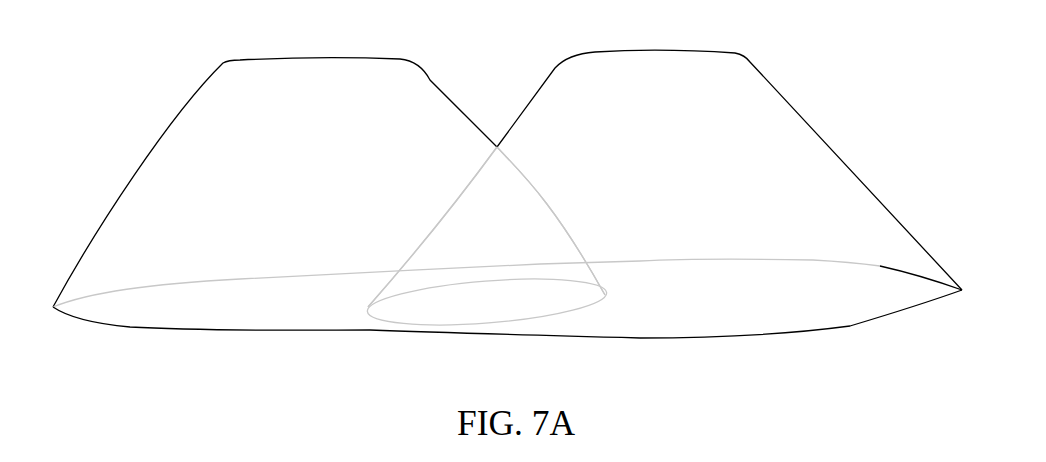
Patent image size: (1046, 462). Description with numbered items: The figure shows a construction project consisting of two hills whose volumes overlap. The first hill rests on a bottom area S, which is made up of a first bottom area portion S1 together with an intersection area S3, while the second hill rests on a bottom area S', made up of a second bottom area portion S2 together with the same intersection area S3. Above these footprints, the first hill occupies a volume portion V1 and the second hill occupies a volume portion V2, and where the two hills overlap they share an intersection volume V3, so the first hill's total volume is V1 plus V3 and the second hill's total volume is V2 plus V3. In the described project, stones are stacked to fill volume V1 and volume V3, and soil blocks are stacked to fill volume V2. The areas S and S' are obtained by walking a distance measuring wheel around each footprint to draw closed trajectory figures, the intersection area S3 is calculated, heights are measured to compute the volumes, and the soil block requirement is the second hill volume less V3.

The first hill volume portion V1 is at (329, 182).
The second hill volume portion V2 is at (665, 178).
The intersection volume V3 is at (486, 227).
The first hill bottom area portion S1 is at (346, 299).
The second hill bottom area portion S2 is at (801, 298).
The intersection area S3 is at (487, 302).
The bottom area of first hill S is at (158, 280).
The bottom area of second hill S' is at (892, 267).